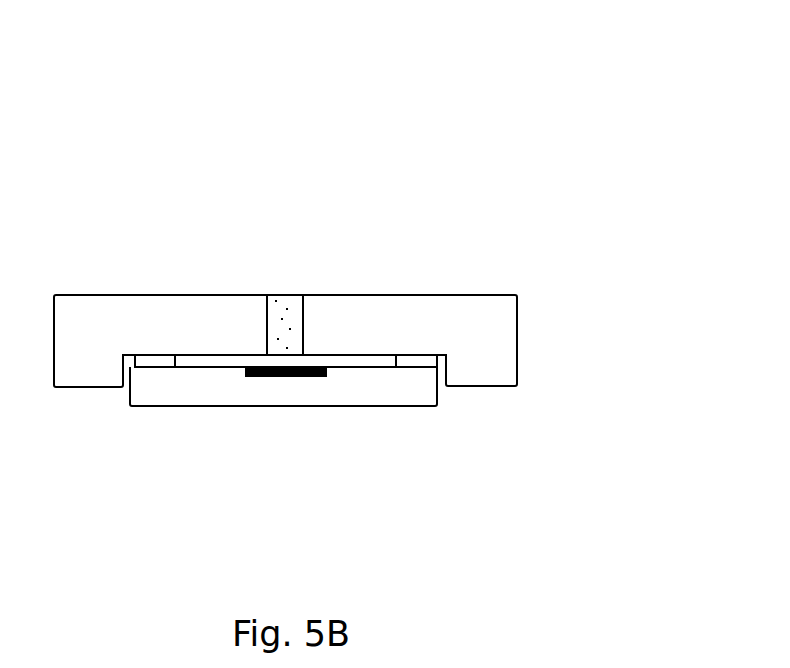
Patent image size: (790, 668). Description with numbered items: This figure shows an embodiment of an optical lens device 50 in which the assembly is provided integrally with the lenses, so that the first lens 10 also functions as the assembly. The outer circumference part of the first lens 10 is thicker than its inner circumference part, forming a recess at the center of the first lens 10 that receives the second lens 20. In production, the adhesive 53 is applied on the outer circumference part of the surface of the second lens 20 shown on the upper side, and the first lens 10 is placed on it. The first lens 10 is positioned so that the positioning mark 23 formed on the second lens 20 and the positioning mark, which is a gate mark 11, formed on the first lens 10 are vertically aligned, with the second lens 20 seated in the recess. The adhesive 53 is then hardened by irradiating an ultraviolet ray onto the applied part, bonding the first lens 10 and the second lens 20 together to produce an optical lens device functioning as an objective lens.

The flow cell assembly 50 is at (273, 168).
The first lens 10 is at (462, 300).
The positioning mark (gate mark) 11 is at (282, 293).
The adhesive 53 is at (155, 354).
The second lens 20 is at (390, 406).
The positioning mark 23 is at (265, 377).